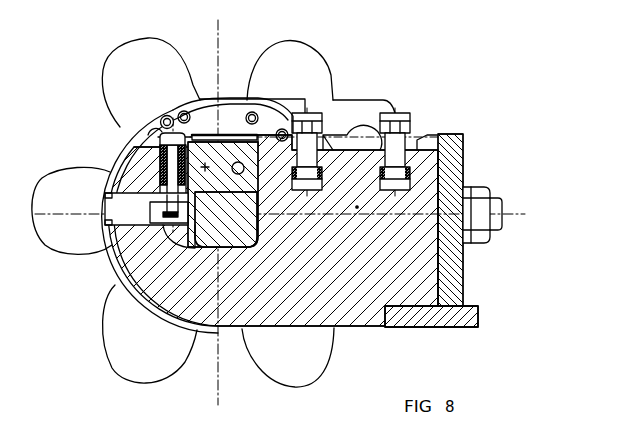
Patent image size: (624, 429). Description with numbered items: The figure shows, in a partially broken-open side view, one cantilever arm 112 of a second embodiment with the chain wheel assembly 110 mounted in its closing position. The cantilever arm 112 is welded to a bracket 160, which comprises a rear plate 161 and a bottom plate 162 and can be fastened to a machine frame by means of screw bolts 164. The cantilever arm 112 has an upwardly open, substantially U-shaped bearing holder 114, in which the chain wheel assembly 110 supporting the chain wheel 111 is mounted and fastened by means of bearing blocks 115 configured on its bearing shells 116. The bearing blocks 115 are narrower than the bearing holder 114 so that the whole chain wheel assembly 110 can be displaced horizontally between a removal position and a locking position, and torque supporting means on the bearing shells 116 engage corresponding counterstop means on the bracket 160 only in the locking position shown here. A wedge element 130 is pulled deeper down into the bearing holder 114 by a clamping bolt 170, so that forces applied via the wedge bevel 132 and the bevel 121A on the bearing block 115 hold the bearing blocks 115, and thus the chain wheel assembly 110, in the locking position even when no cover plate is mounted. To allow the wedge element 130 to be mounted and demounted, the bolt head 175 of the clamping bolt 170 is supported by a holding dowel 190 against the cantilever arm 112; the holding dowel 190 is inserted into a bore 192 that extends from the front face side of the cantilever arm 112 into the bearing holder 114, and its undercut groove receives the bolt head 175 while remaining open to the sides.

The chain wheel assembly 110 is at (305, 35).
The chain wheel 111 is at (313, 78).
The cantilever arm 112 is at (363, 287).
The bearing holder 114 is at (126, 292).
The bearing block 115 is at (231, 249).
The bearing shell 116 is at (230, 110).
The bevel 121A is at (181, 111).
The wedge element 130 is at (160, 139).
The wedge bevel 132 is at (205, 133).
The bracket 160 is at (455, 104).
The rear plate 161 is at (453, 143).
The bottom plate 162 is at (439, 318).
The screw bolt 164 is at (472, 207).
The clamping bolt 170 is at (165, 168).
The bolt head 175 is at (108, 206).
The holding dowel 190 is at (106, 222).
The bore 192 is at (117, 230).